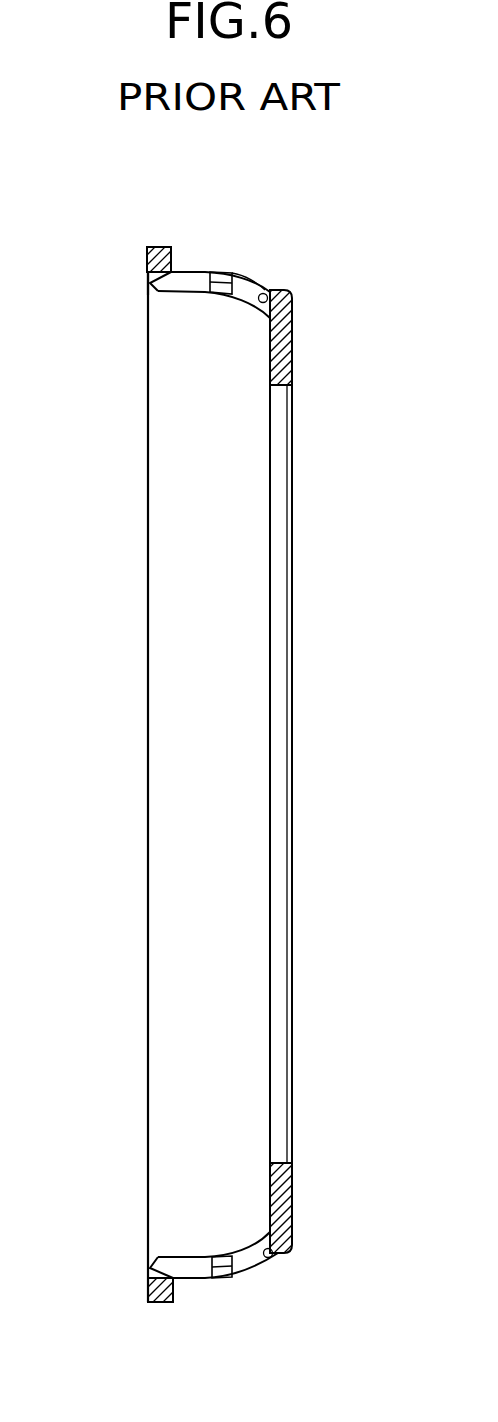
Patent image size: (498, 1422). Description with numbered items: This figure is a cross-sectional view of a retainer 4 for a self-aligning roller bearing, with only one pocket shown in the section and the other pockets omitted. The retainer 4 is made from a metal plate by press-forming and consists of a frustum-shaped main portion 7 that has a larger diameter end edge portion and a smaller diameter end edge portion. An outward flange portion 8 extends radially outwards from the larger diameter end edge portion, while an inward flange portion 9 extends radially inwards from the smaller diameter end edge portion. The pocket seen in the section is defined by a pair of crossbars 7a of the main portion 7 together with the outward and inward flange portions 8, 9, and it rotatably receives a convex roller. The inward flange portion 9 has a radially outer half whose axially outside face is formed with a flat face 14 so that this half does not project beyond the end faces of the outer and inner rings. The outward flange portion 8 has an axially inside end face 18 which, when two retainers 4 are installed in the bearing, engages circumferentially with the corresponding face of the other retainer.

The retainer 4 is at (294, 332).
The main portion 7 is at (213, 314).
The crossbar 7a is at (251, 292).
The outward flange portion 8 is at (155, 247).
The inward flange portion 9 is at (284, 373).
The flat face 14 is at (286, 1205).
The axially inside end face 18 is at (147, 280).